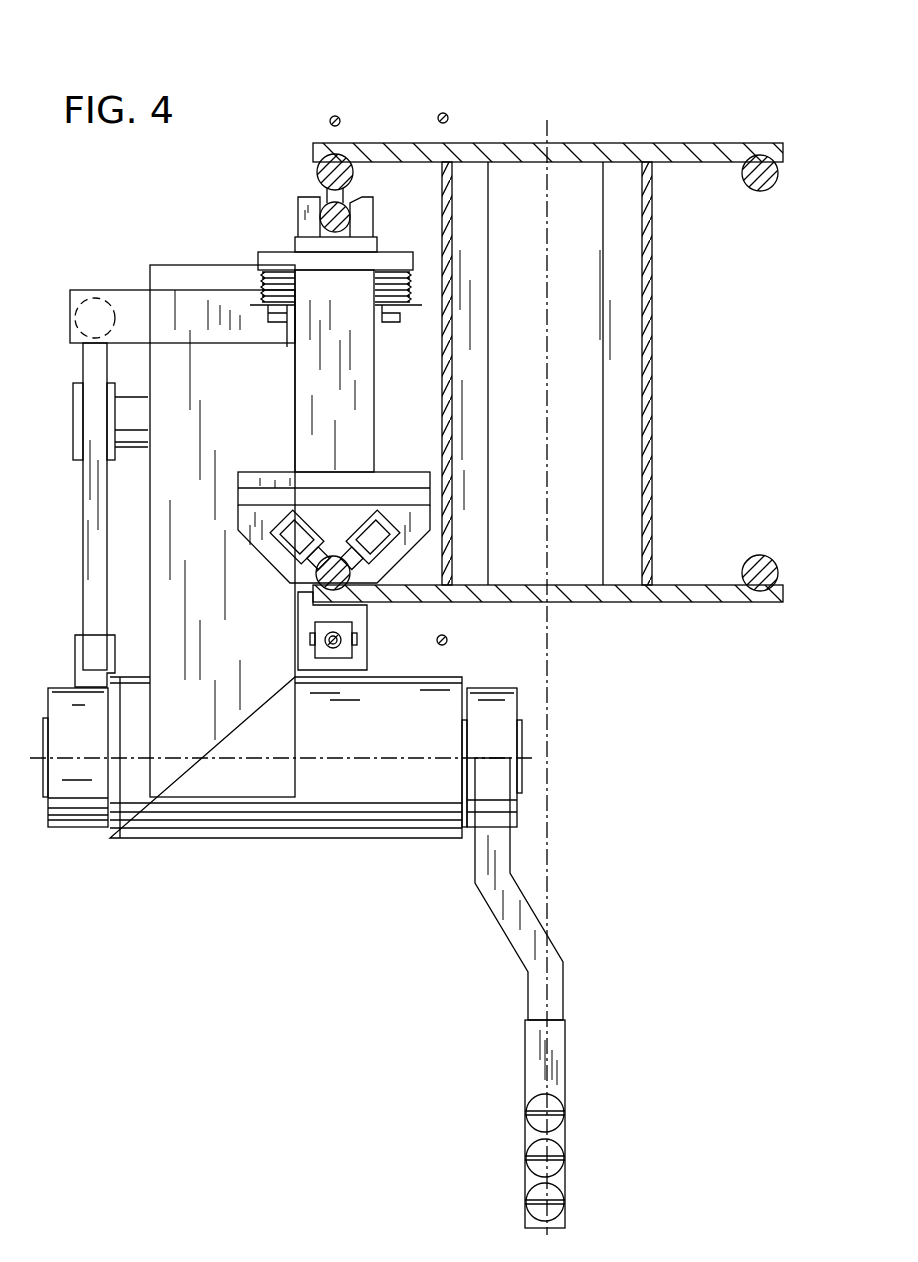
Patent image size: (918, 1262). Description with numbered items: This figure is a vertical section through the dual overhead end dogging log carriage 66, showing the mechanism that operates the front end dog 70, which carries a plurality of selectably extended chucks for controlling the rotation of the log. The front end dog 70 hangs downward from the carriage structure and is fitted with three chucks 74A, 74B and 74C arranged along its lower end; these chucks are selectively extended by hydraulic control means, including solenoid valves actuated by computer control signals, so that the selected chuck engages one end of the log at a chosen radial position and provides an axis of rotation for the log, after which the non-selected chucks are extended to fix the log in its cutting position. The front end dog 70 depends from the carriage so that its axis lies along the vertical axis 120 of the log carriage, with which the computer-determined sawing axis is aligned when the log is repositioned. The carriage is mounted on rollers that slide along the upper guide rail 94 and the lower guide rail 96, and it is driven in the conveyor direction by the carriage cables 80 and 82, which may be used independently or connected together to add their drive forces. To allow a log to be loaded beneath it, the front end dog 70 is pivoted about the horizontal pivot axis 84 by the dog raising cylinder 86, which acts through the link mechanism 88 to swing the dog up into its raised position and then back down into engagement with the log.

The log carriage 66 is at (580, 120).
The front end dog 70 is at (525, 1065).
The chuck 74A is at (560, 1190).
The chuck 74B is at (558, 1145).
The chuck 74C is at (556, 1100).
The carriage cable 80 is at (337, 115).
The carriage cable 82 is at (447, 113).
The horizontal pivot axis 84 is at (396, 755).
The dog raising cylinder 86 is at (118, 320).
The link mechanism 88 is at (80, 565).
The upper guide rail 94 is at (350, 180).
The lower guide rail 96 is at (333, 556).
The vertical axis of the log carriage 120 is at (550, 862).